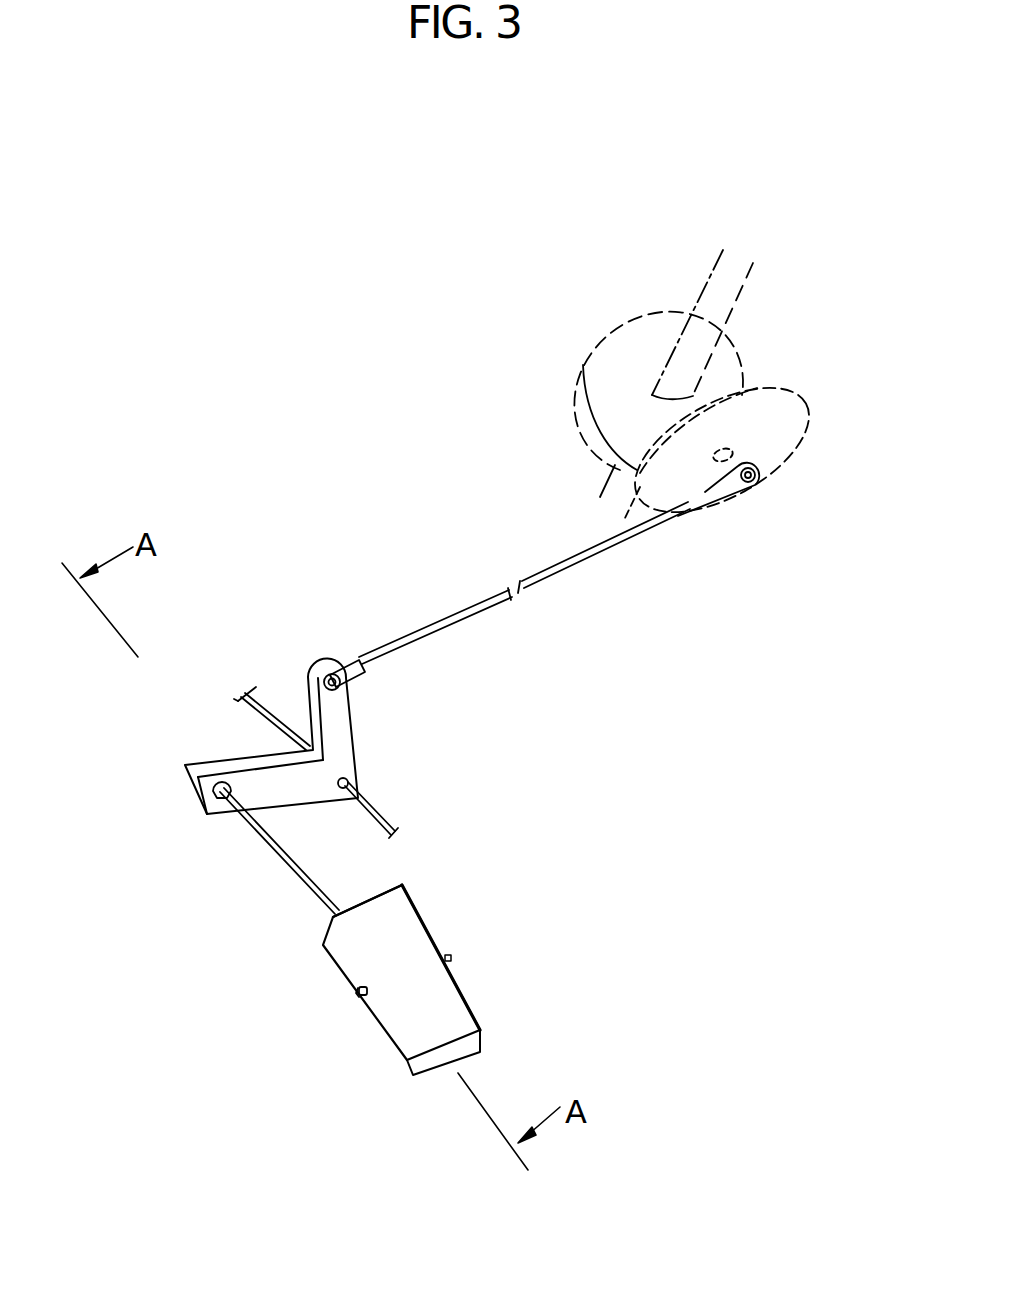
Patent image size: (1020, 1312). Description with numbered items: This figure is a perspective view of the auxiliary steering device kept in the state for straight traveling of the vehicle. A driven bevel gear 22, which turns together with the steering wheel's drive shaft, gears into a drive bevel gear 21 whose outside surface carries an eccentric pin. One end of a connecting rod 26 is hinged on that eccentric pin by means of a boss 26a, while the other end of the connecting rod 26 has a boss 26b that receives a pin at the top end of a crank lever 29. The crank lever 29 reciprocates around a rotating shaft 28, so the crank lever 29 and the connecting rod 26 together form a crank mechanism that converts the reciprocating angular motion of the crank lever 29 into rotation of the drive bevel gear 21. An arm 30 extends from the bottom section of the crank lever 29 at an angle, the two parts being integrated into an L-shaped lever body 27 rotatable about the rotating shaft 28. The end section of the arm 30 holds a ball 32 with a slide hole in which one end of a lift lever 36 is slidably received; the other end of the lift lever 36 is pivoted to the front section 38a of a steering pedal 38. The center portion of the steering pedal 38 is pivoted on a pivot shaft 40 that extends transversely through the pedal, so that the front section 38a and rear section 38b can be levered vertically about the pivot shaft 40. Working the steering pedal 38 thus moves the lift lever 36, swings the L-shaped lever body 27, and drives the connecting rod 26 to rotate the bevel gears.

The drive bevel gear 21 is at (800, 402).
The driven bevel gear 22 is at (723, 337).
The connecting rod 26 is at (553, 597).
The boss 26a is at (748, 487).
The boss 26b is at (348, 686).
The L-shaped lever body 27 is at (237, 762).
The rotating shaft 28 is at (385, 817).
The crank lever 29 is at (340, 728).
The arm 30 is at (185, 765).
The ball 32 is at (200, 803).
The lift lever 36 is at (275, 853).
The steering pedal 38 is at (467, 987).
The front section 38a is at (402, 886).
The rear section 38b is at (480, 1025).
The pivot shaft 40 is at (362, 996).